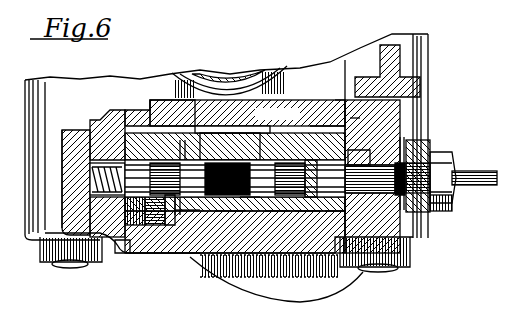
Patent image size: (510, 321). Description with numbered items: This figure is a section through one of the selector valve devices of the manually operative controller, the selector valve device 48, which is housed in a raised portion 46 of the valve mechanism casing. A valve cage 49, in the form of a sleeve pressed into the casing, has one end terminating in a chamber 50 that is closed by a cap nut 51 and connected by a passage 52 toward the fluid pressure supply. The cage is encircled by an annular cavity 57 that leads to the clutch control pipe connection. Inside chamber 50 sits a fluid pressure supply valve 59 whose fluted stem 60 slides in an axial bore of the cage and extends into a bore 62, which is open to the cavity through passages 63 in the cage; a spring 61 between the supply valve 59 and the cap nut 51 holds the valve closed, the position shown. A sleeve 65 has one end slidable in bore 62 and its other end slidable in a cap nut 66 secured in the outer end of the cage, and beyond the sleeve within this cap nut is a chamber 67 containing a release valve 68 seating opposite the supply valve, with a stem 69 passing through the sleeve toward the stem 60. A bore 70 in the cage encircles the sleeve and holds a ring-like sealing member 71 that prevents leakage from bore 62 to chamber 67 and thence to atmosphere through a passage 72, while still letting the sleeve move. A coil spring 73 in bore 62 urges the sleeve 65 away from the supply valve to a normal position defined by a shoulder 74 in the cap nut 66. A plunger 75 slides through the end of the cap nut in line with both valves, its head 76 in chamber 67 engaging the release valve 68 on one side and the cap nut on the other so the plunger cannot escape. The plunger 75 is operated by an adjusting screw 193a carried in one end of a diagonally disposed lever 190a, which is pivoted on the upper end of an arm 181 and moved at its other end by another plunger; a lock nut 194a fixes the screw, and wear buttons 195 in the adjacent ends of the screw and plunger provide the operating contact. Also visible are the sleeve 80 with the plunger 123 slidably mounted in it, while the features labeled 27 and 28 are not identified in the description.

The lower boss 27 is at (58, 270).
The lower boss 28 is at (410, 266).
The raised portion 46 is at (150, 262).
The selector valve device 48 is at (182, 260).
The valve cage 49 is at (160, 118).
The chamber 50 is at (124, 118).
The cap nut 51 is at (70, 207).
The passage 52 is at (122, 254).
The annular cavity 57 is at (208, 255).
The fluid pressure supply valve 59 is at (119, 211).
The fluted stem 60 is at (157, 210).
The spring 61 is at (92, 178).
The bore 62 is at (170, 253).
The passages 63 is at (196, 275).
The sleeve 65 is at (225, 254).
The cap nut 66 is at (340, 100).
The chamber 67 is at (353, 127).
The release valve 68 is at (302, 255).
The stem 69 is at (246, 255).
The bore 70 is at (277, 117).
The ring-like sealing member 71 is at (276, 255).
The passage 72 is at (334, 255).
The coil spring 73 is at (230, 146).
The shoulder 74 is at (327, 118).
The plunger 75 is at (380, 168).
The head 76 is at (358, 162).
The sleeve 80 is at (217, 72).
The plunger 123 is at (238, 72).
The arm 181 is at (421, 83).
The lever 190a is at (426, 152).
The adjusting screw 193a is at (456, 180).
The lock nut 194a is at (454, 166).
The wear buttons 195 is at (392, 200).